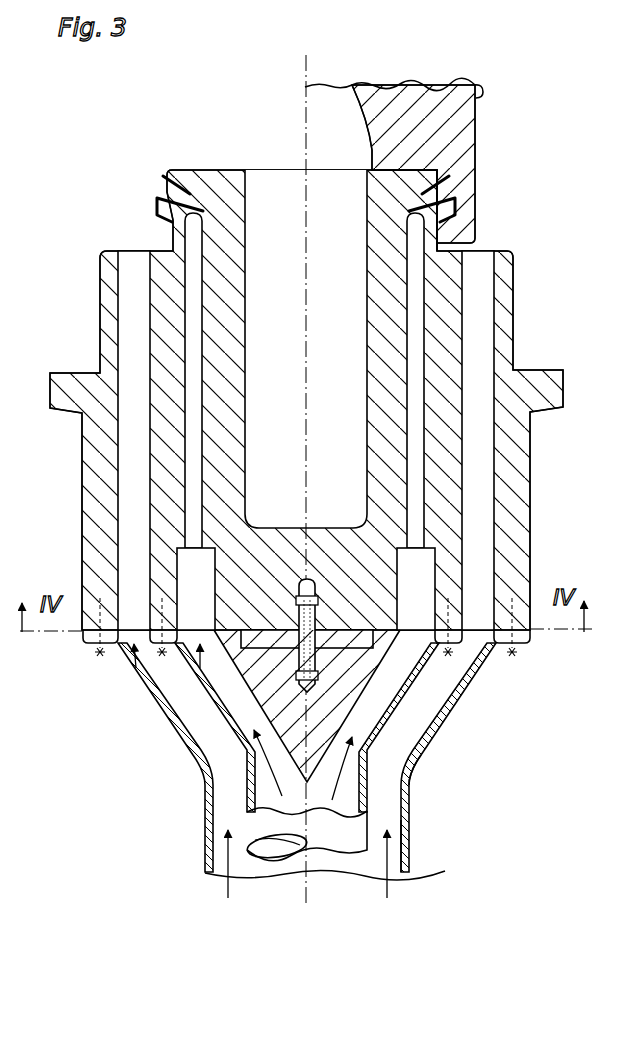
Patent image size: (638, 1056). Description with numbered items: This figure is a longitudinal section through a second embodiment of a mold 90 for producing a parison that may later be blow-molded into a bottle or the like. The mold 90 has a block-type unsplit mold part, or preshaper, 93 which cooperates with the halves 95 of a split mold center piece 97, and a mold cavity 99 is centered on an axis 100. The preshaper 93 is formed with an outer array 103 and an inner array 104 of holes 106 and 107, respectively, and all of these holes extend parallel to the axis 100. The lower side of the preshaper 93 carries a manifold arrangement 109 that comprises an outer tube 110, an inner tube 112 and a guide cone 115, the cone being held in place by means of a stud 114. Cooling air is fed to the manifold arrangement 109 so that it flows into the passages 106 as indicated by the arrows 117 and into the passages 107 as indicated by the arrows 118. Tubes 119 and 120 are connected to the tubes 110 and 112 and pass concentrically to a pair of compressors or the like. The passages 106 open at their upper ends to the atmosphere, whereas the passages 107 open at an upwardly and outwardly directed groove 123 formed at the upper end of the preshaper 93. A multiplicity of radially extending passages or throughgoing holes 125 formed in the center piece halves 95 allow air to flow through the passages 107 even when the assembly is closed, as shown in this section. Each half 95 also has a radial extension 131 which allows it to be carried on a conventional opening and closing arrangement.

The mold 90 is at (240, 150).
The unsplit mold part 93 is at (78, 489).
The halves of split mold center piece 95 is at (477, 130).
The split mold center piece 97 is at (448, 82).
The mold cavity 99 is at (320, 123).
The axis 100 is at (310, 470).
The outer array 103 is at (130, 672).
The inner array 104 is at (200, 655).
The holes 106 is at (484, 498).
The holes 107 is at (196, 487).
The manifold arrangement 109 is at (474, 703).
The outer tube 110 is at (443, 727).
The inner tube 112 is at (410, 752).
The stud 114 is at (318, 640).
The guide cone 115 is at (378, 672).
The arrows 117 is at (226, 888).
The arrows 118 is at (306, 836).
The tube 119 is at (410, 840).
The tube 120 is at (392, 816).
The groove 123 is at (185, 207).
The radially extending passages 125 is at (462, 175).
The radial extension 131 is at (483, 95).